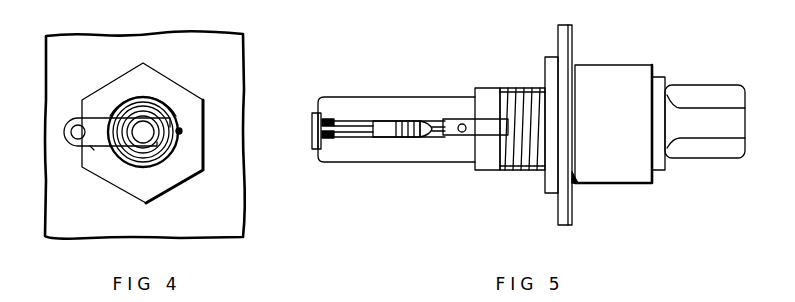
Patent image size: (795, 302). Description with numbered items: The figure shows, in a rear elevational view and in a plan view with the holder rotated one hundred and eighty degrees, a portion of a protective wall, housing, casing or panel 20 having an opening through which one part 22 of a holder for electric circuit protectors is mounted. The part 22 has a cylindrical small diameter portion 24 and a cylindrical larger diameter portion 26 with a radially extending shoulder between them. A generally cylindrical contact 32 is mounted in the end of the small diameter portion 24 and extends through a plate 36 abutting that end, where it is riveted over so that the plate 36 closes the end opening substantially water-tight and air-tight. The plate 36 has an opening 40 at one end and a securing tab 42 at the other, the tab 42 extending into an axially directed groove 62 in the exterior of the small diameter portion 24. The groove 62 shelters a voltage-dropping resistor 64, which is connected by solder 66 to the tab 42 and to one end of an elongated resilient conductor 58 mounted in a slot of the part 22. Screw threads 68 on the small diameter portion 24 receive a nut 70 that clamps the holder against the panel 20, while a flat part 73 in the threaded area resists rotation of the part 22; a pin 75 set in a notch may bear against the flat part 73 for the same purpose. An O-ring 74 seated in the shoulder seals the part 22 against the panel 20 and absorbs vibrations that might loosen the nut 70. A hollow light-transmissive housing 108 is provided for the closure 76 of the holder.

In FIG. 4, the portion of a protective wall, housing, casing or panel 20 is at (227, 73).
In FIG. 5, the portion of a protective wall, housing, casing or panel 20 is at (573, 43).
In FIG. 5, the part of the holder 22 is at (417, 234).
In FIG. 4, the small diameter portion 24 is at (149, 161).
In FIG. 5, the small diameter portion 24 is at (367, 96).
In FIG. 5, the larger diameter portion 26 is at (640, 72).
In FIG. 4, the contact 32 is at (138, 138).
In FIG. 5, the contact 32 is at (313, 145).
In FIG. 4, the plate 36 is at (90, 154).
In FIG. 5, the plate 36 is at (316, 112).
In FIG. 4, the opening 40 is at (80, 129).
In FIG. 4, the securing tab 42 is at (186, 130).
In FIG. 5, the securing tab 42 is at (342, 137).
In FIG. 5, the elongated conductor 58 is at (486, 118).
In FIG. 5, the groove 62 is at (381, 141).
In FIG. 5, the resistor 64 is at (397, 120).
In FIG. 5, the solder 66 is at (326, 118).
In FIG. 4, the screw threads 68 is at (178, 152).
In FIG. 5, the screw threads 68 is at (516, 168).
In FIG. 4, the nut 70 is at (133, 80).
In FIG. 5, the nut 70 is at (552, 195).
In FIG. 4, the flat part 73 is at (165, 95).
In FIG. 5, the O-ring 74 is at (579, 178).
In FIG. 5, the pin 75 is at (520, 87).
In FIG. 5, the closure 76 is at (716, 190).
In FIG. 5, the hollow light-transmissive housing 108 is at (698, 92).